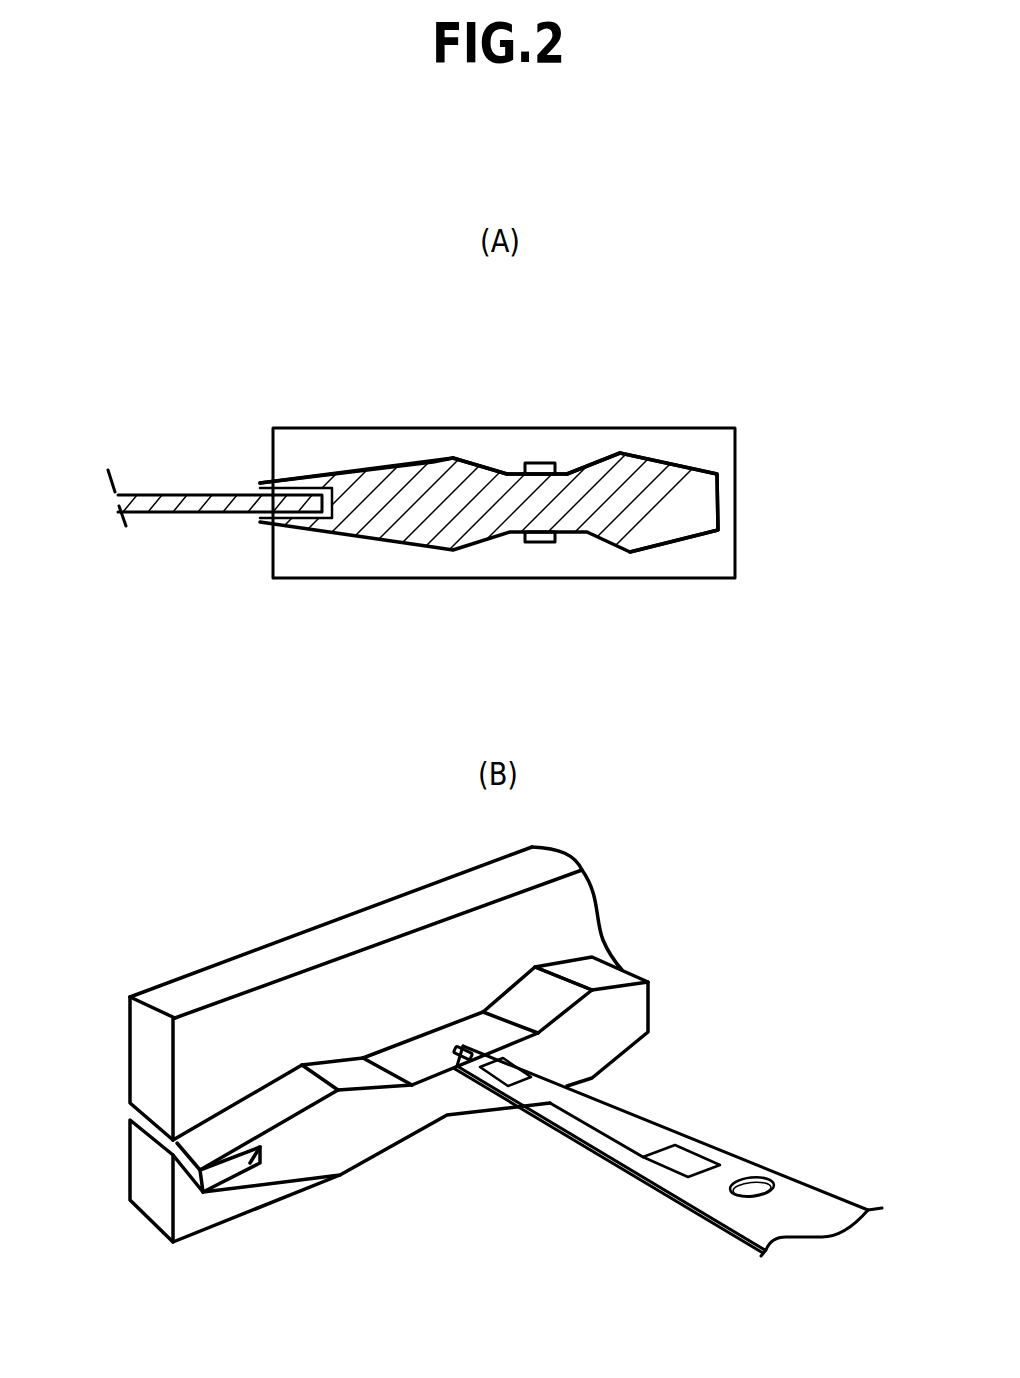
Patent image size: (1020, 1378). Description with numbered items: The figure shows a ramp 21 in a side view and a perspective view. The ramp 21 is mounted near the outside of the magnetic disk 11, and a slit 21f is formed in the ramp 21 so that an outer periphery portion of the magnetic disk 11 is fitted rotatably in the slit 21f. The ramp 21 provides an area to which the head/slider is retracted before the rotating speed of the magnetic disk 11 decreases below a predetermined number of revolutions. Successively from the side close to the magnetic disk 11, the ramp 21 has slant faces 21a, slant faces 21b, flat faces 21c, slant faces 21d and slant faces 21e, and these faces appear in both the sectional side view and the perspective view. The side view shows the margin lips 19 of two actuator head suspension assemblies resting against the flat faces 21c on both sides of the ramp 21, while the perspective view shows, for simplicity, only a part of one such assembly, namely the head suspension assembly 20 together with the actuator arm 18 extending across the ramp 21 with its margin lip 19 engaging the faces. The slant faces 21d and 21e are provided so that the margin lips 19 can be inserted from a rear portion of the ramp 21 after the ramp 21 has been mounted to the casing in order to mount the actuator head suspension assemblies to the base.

The magnetic disk 11 is at (160, 495).
The actuator arm 18 is at (712, 1187).
The margin lip 19 is at (538, 467).
The head suspension assembly 20 is at (600, 1120).
The ramp 21 is at (292, 428).
The slant face 21a is at (393, 463).
The slant face 21b is at (478, 467).
The flat face 21c is at (572, 472).
The slant face 21d is at (598, 467).
The slant face 21e is at (677, 473).
The slit 21f is at (293, 522).